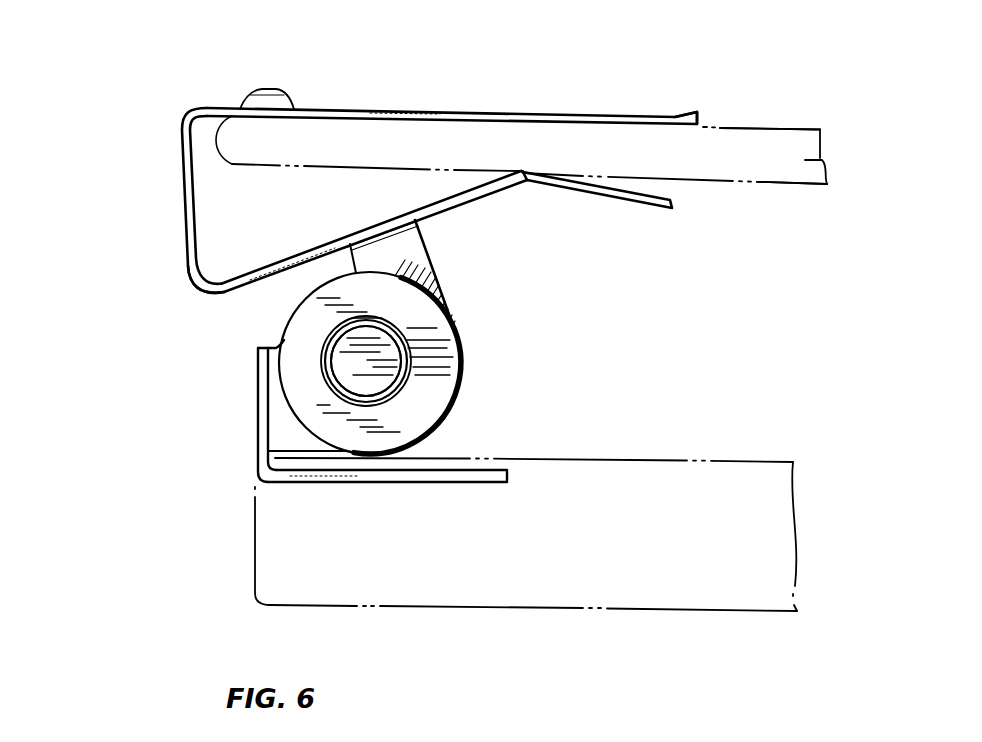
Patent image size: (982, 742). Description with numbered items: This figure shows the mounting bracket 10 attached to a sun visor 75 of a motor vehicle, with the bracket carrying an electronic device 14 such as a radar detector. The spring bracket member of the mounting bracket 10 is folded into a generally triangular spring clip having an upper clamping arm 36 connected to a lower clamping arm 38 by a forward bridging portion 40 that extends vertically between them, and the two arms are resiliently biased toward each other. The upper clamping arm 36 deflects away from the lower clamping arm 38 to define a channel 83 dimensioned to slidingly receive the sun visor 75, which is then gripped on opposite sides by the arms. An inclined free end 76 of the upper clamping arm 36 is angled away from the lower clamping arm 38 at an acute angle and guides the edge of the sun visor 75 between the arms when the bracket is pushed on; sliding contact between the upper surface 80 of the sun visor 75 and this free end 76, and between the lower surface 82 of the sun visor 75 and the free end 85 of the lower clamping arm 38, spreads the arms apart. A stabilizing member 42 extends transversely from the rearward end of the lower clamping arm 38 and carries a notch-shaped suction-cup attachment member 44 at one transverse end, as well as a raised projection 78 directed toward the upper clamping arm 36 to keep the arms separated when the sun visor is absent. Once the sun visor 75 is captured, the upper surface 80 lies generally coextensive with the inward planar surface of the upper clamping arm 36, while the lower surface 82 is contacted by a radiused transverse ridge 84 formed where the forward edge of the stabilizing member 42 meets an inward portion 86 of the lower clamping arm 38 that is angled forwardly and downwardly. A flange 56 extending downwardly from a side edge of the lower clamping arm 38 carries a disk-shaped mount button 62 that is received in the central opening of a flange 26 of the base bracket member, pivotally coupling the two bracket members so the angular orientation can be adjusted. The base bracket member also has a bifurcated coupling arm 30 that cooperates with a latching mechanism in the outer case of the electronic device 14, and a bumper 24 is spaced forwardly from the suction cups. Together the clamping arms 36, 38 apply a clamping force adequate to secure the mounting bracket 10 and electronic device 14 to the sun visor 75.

The mounting bracket 10 is at (76, 72).
The electronic device 14 is at (737, 459).
The bumper 24 is at (281, 85).
The flange 26 is at (427, 390).
The bifurcated coupling arm 30 is at (440, 480).
The upper clamping arm 36 is at (450, 109).
The lower clamping arm 38 is at (248, 284).
The forward bridging portion 40 is at (178, 150).
The stabilizing member 42 is at (562, 197).
The suction-cup attachment member 44 is at (601, 194).
The flange 56 is at (276, 340).
The mount button 62 is at (357, 362).
The sun visor 75 is at (820, 164).
The inclined free end 76 is at (698, 116).
The raised projection 78 is at (617, 176).
The upper surface 80 is at (772, 128).
The lower surface 82 is at (797, 185).
The channel 83 is at (370, 211).
The radiused transverse ridge 84 is at (517, 168).
The free end 85 is at (653, 185).
The inward portion 86 is at (263, 263).